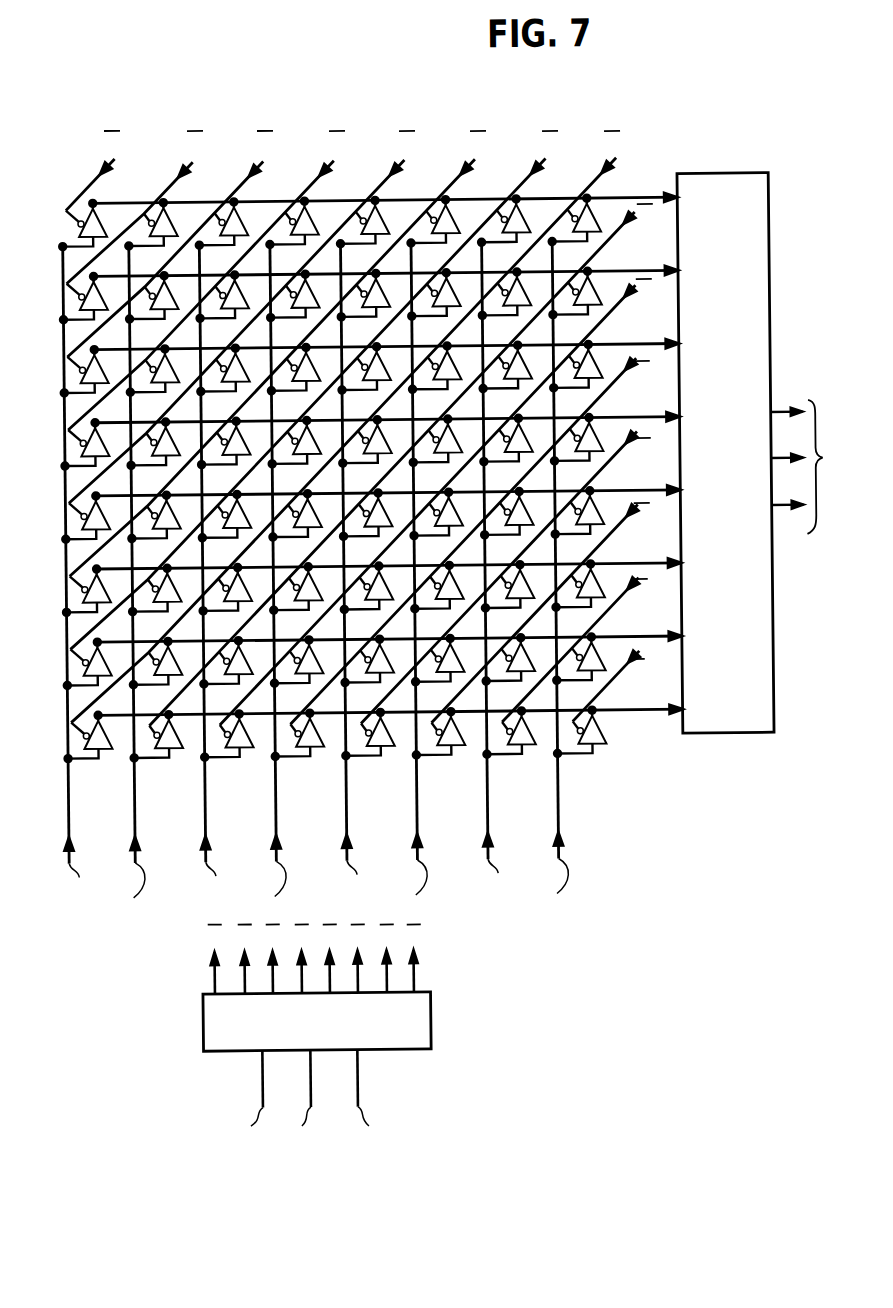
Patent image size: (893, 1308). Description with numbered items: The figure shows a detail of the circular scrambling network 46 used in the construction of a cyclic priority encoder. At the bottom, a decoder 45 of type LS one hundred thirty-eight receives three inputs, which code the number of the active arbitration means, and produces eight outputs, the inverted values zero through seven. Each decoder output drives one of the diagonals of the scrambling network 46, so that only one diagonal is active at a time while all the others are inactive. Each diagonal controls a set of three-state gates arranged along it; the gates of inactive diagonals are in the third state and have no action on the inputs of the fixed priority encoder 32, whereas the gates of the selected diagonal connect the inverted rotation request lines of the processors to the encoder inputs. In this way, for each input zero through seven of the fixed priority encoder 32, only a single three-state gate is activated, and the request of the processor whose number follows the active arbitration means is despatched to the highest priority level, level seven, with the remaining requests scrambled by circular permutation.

The scrambling network 46 is at (393, 82).
The fixed priority encoder 32 is at (722, 188).
The decoder 45 is at (416, 1019).